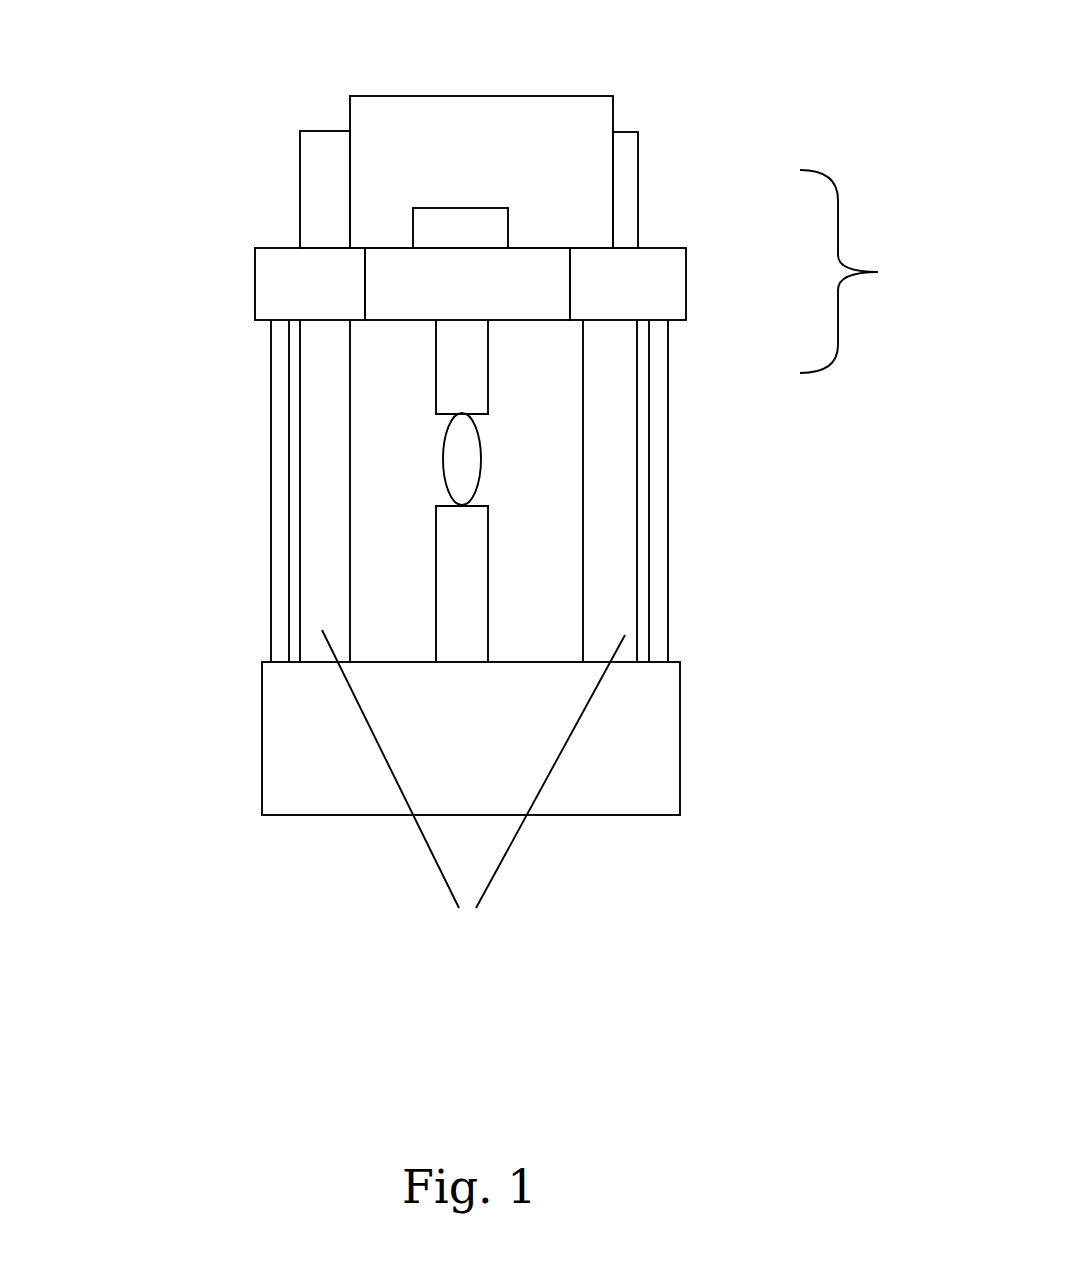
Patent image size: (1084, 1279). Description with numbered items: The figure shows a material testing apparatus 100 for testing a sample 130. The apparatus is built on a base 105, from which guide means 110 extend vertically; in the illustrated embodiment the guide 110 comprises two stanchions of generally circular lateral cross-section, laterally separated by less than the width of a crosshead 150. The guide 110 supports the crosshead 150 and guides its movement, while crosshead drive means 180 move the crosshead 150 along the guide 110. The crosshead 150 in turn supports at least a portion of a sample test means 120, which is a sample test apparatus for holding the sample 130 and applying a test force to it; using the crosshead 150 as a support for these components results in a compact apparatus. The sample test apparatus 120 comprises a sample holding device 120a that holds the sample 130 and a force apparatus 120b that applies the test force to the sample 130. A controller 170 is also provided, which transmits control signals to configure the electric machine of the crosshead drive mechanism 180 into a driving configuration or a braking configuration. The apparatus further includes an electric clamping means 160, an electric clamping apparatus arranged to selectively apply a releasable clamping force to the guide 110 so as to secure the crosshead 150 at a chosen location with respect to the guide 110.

The material testing apparatus 100 is at (240, 58).
The base 105 is at (647, 767).
The guide means 110 is at (473, 805).
The sample test means 120 is at (880, 271).
The sample holding device 120a is at (458, 553).
The force apparatus 120b is at (558, 215).
The sample 130 is at (468, 469).
The crosshead 150 is at (434, 263).
The electric clamping means 160 is at (592, 305).
The controller 170 is at (475, 225).
The crosshead drive means 180 is at (659, 573).